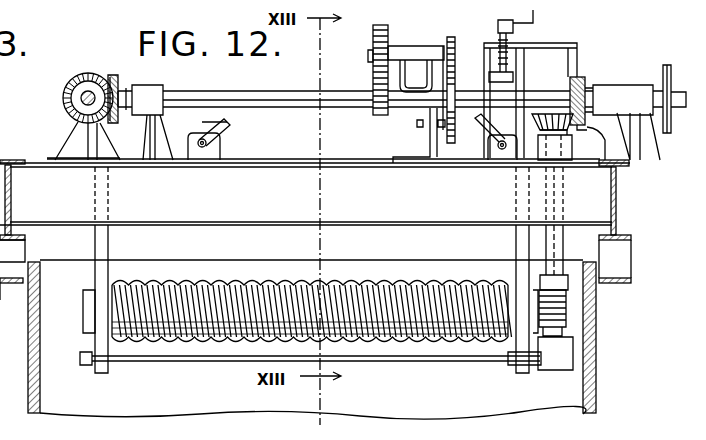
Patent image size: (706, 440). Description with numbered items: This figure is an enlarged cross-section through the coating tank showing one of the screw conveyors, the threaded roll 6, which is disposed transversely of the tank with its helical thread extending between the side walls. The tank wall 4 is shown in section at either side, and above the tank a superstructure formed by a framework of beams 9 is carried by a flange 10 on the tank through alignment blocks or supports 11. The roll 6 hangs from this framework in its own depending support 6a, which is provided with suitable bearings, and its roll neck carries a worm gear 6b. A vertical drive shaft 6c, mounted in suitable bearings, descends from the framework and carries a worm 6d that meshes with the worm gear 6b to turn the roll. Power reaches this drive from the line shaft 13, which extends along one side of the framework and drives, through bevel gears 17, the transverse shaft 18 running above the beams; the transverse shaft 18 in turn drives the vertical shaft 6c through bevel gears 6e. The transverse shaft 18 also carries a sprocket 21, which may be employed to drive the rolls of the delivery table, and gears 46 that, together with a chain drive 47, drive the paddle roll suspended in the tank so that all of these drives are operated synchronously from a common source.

The roll 4 is at (32, 388).
The roll 6 is at (342, 283).
The depending support 6a is at (103, 250).
The worm gear 6b is at (566, 287).
The vertical drive shaft 6c is at (556, 241).
The worm 6d is at (568, 316).
The bevel gears 6e is at (548, 112).
The framework 9 is at (55, 207).
The flange 10 is at (629, 280).
The alignment blocks 11 is at (12, 258).
The line shaft 13 is at (65, 97).
The bevel gears 17 is at (112, 75).
The transverse shaft 18 is at (302, 97).
The sprocket 21 is at (663, 67).
The gears 46 is at (373, 83).
The chain drive 47 is at (453, 75).